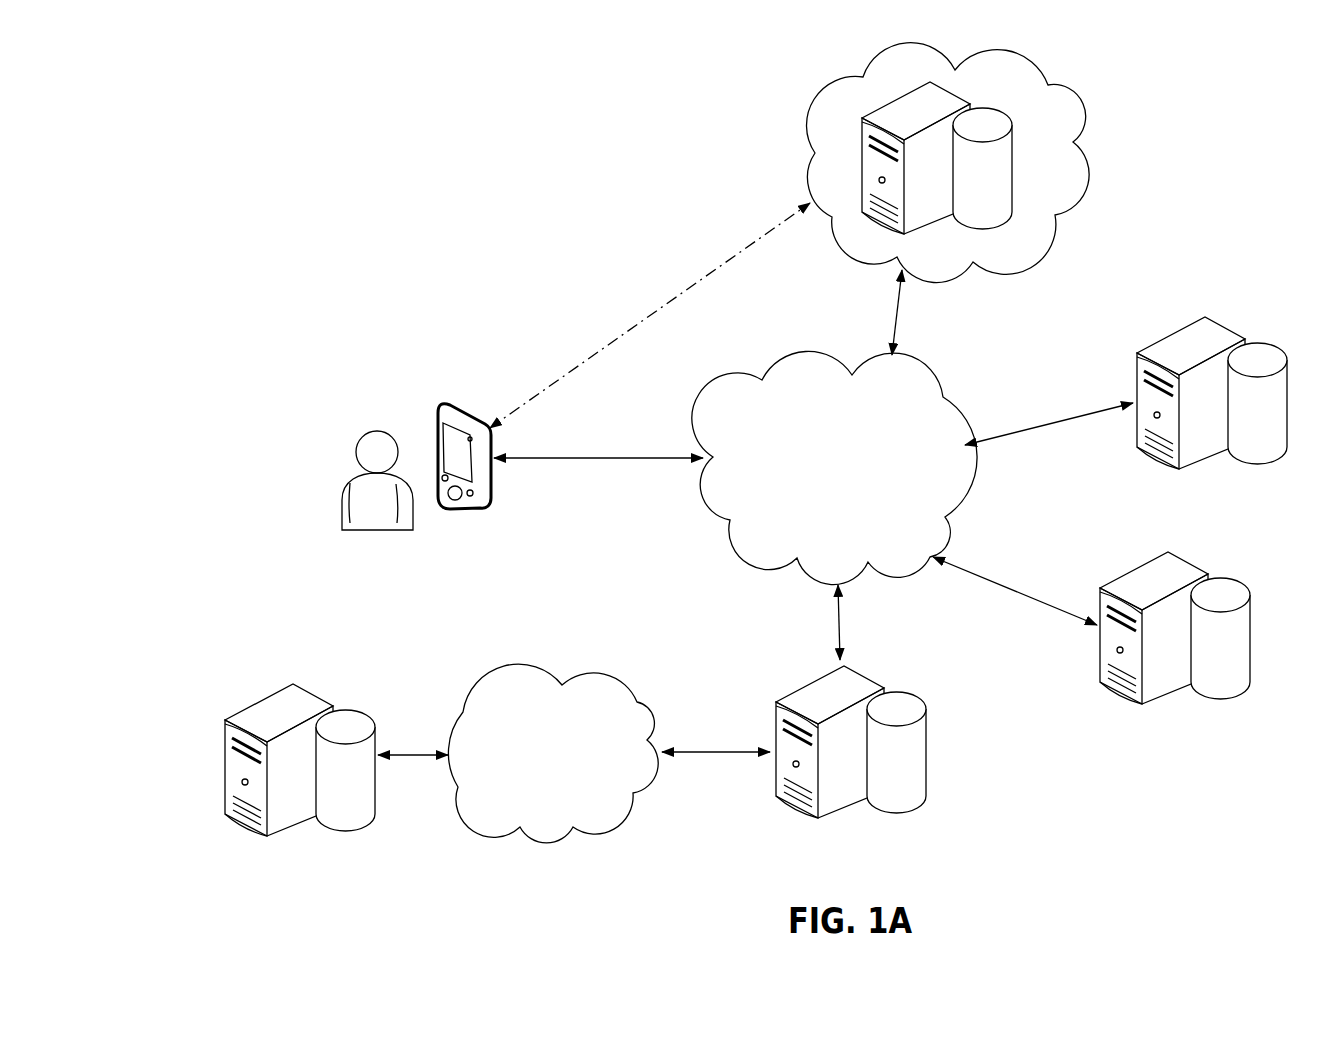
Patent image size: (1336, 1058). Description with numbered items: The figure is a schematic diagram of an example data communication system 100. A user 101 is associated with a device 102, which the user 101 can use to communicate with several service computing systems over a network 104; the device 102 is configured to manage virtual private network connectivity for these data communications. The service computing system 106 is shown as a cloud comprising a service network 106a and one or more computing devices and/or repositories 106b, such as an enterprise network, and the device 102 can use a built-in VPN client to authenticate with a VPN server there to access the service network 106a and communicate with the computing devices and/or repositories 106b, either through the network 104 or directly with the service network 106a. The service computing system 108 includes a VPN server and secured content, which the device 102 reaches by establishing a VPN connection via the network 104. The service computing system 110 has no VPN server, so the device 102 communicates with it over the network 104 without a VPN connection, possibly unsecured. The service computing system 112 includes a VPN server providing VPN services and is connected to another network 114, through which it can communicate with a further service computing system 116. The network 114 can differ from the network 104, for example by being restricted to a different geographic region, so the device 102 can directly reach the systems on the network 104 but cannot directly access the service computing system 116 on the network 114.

The data communication system 100 is at (191, 102).
The user 101 is at (342, 490).
The device 102 is at (447, 407).
The network 104 is at (834, 467).
The service computing system 106 is at (936, 149).
The service network 106a is at (1078, 120).
The computing devices and/or repositories 106b is at (945, 80).
The service computing system 108 is at (1136, 352).
The service computing system 110 is at (1100, 587).
The service computing system 112 is at (776, 702).
The network 114 is at (553, 753).
The service computing system 116 is at (229, 719).